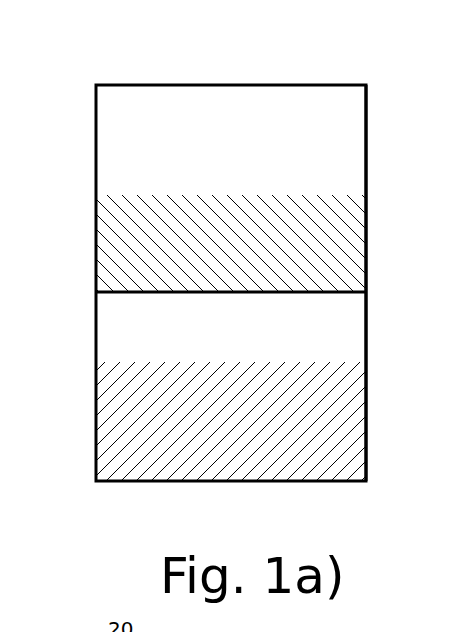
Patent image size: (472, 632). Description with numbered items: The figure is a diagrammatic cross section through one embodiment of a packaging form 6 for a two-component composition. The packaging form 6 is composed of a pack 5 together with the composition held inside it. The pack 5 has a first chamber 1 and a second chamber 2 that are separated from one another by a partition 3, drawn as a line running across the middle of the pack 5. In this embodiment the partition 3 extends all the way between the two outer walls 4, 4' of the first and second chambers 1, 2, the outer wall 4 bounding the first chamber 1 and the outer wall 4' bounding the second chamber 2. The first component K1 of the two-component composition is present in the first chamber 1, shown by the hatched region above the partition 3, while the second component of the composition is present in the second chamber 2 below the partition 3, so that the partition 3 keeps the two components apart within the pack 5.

The first chamber 1 is at (125, 153).
The second chamber 2 is at (333, 350).
The partition 3 is at (127, 298).
The outer wall 4 is at (398, 188).
The outer wall 4' is at (401, 386).
The pack 5 is at (225, 246).
The packaging form 6 is at (200, 65).
The first component K1 is at (107, 252).